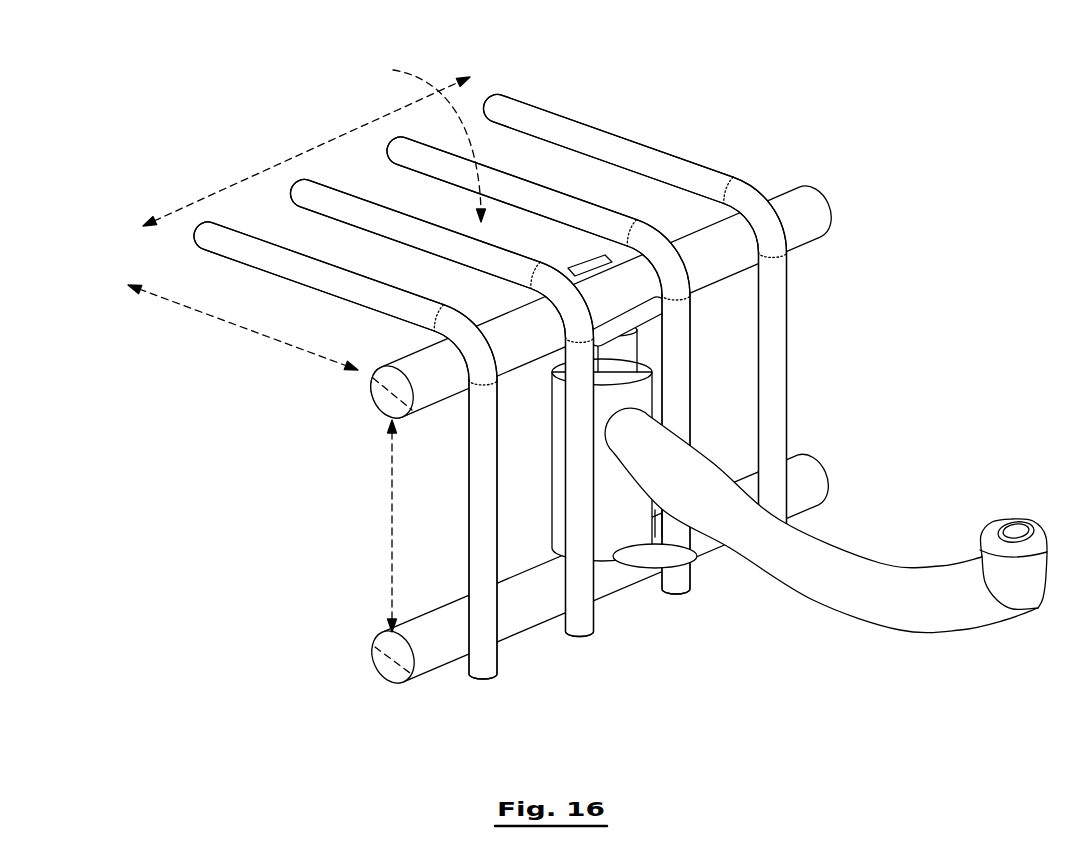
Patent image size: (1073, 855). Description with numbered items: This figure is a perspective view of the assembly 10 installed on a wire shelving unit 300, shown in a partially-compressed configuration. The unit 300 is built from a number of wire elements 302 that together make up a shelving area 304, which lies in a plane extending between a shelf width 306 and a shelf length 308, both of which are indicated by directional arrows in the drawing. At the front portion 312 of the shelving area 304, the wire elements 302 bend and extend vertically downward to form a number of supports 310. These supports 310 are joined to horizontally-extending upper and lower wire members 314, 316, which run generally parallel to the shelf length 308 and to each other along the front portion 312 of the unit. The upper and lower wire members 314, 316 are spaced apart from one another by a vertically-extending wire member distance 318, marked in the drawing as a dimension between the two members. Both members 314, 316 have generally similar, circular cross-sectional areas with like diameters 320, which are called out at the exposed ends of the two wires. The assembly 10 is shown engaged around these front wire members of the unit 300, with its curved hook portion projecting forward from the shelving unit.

The assembly 10 is at (838, 426).
The wire shelving unit 300 is at (491, 361).
The wire elements 302 is at (597, 137).
The shelving area 304 is at (423, 136).
The shelf width 306 is at (223, 321).
The shelf length 308 is at (310, 150).
The supports 310 is at (773, 390).
The front portion 312 is at (772, 222).
The upper wire member 314 is at (718, 233).
The lower wire member 316 is at (518, 610).
The wire member distance 318 is at (392, 522).
The diameters 320 is at (378, 402).